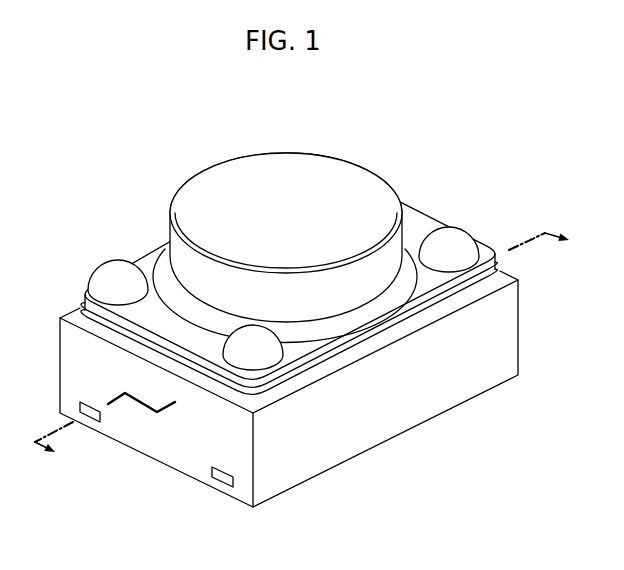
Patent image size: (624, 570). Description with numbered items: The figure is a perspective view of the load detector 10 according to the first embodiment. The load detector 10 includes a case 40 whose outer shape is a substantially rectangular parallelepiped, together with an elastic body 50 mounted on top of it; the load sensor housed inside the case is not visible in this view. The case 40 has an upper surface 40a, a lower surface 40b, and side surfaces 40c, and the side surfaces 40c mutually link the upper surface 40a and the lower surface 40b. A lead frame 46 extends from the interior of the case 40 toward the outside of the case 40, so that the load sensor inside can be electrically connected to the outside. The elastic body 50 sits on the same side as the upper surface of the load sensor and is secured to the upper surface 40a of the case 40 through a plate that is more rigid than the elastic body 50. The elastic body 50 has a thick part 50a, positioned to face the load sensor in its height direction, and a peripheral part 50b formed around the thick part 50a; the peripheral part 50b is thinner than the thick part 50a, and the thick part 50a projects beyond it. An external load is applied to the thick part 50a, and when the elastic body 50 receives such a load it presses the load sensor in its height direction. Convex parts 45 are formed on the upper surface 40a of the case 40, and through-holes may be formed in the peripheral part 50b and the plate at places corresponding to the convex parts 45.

The load detector 10 is at (157, 114).
The case 40 is at (400, 410).
The upper surface 40a is at (62, 316).
The lower surface 40b is at (462, 405).
The side surfaces 40c is at (163, 437).
The convex parts 45 is at (117, 272).
The lead frame 46 is at (92, 416).
The elastic body 50 is at (455, 109).
The thick part 50a is at (347, 182).
The peripheral part 50b is at (419, 230).